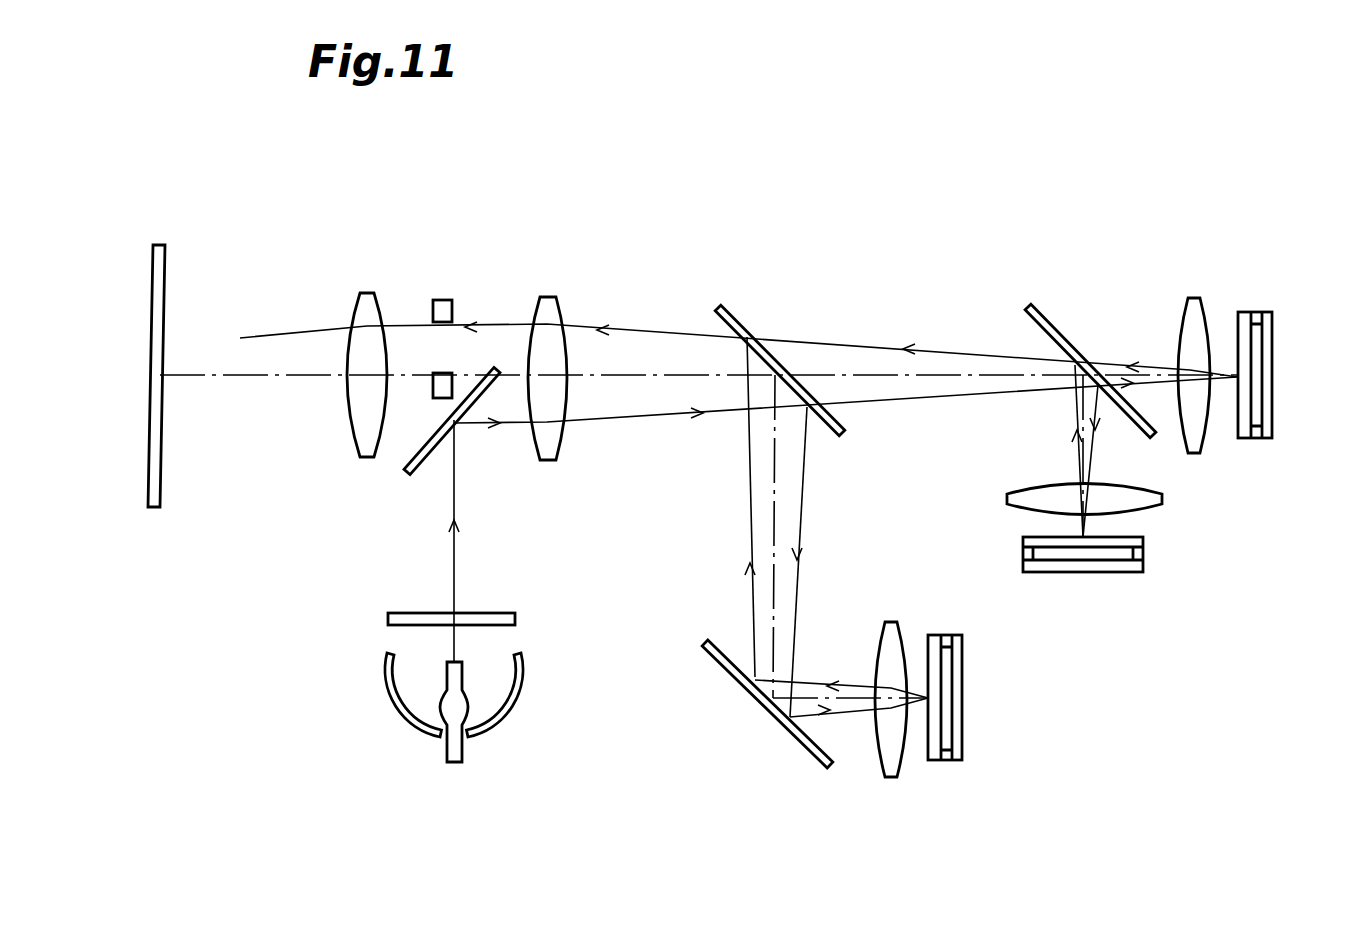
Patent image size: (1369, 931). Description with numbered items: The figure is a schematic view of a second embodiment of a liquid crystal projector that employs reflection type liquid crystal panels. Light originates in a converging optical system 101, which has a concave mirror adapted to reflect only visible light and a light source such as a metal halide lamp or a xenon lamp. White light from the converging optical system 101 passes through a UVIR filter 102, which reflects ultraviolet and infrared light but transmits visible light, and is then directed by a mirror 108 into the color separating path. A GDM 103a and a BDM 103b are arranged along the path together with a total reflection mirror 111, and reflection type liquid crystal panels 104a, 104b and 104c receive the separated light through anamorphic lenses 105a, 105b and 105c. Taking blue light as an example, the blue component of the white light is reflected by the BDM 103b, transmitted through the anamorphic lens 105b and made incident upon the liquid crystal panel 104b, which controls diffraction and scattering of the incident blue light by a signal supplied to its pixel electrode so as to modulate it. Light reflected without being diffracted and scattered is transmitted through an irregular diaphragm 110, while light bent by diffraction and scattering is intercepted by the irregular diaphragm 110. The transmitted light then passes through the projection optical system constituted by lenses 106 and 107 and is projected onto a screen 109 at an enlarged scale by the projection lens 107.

The converging optical system 101 is at (488, 733).
The UVIR filter 102 is at (478, 613).
The GDM 103a is at (732, 303).
The BDM 103b is at (1038, 305).
The reflection type liquid crystal panel 104a is at (962, 760).
The reflection type liquid crystal panel 104b is at (1143, 567).
The reflection type liquid crystal panel 104c is at (1265, 440).
The anamorphic lens 105a is at (890, 777).
The anamorphic lens 105b is at (1007, 498).
The anamorphic lens 105c is at (1217, 272).
The lens 106 is at (570, 475).
The projection lens 107 is at (362, 455).
The mirror 108 is at (405, 473).
The screen 109 is at (158, 245).
The irregular diaphragm 110 is at (443, 298).
The total reflection mirror 111 is at (815, 753).